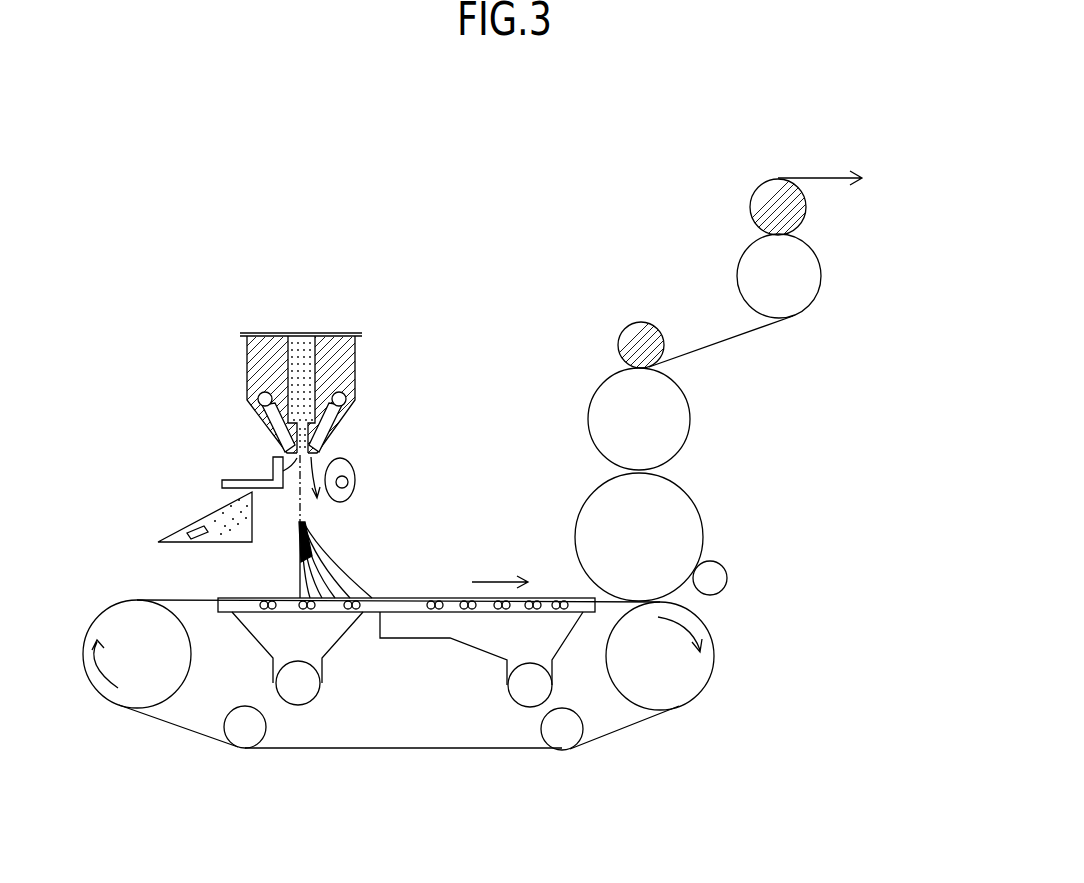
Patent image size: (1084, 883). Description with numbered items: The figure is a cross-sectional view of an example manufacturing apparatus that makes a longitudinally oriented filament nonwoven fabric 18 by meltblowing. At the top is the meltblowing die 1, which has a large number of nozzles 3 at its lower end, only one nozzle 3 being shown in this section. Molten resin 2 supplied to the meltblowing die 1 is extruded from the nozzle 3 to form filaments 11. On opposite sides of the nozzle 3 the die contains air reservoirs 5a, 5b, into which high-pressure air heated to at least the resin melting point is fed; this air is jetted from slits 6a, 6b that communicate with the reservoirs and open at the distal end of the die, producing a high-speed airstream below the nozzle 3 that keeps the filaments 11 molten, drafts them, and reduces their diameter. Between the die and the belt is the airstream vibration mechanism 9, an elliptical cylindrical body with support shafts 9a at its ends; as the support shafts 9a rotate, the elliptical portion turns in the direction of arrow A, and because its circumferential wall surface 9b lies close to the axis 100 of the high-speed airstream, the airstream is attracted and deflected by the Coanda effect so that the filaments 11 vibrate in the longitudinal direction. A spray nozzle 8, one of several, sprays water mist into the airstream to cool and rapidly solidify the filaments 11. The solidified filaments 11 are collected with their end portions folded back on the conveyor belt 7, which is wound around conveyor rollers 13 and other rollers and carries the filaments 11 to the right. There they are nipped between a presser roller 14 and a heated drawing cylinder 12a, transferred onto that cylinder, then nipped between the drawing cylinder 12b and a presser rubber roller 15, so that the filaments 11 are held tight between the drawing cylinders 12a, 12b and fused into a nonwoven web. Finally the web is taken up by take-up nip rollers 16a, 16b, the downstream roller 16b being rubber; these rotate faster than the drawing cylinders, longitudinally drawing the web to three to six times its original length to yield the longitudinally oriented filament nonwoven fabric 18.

The meltblowing die 1 is at (226, 358).
The molten resin 2 is at (303, 333).
The nozzle 3 is at (293, 458).
The air reservoir 5a is at (258, 399).
The air reservoir 5b is at (346, 393).
The slit 6a is at (288, 447).
The slit 6b is at (316, 452).
The conveyor belt 7 is at (627, 730).
The spray nozzle 8 is at (190, 529).
The airstream vibration mechanism 9 is at (338, 461).
The support shaft 9a is at (344, 488).
The circumferential wall surface 9b is at (348, 481).
The filament 11 is at (333, 565).
The drawing cylinder 12a is at (672, 499).
The drawing cylinder 12b is at (672, 421).
The conveyor roller 13 is at (700, 663).
The presser roller 14 is at (727, 580).
The presser rubber roller 15 is at (626, 336).
The take-up nip roller 16a is at (790, 277).
The take-up nip roller 16b is at (797, 203).
The longitudinally oriented filament nonwoven fabric 18 is at (820, 178).
The axis of the high-speed airstream 100 is at (300, 578).
The rotation direction arrow A is at (325, 517).